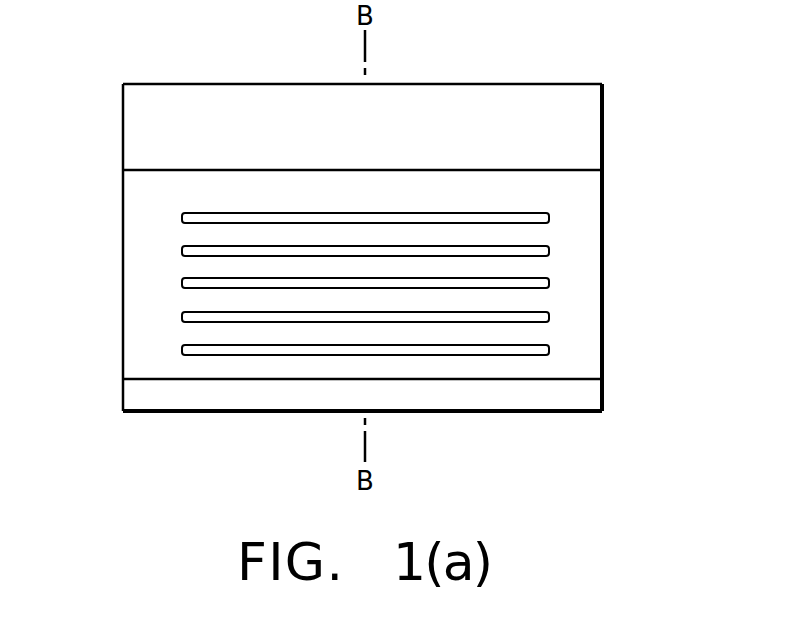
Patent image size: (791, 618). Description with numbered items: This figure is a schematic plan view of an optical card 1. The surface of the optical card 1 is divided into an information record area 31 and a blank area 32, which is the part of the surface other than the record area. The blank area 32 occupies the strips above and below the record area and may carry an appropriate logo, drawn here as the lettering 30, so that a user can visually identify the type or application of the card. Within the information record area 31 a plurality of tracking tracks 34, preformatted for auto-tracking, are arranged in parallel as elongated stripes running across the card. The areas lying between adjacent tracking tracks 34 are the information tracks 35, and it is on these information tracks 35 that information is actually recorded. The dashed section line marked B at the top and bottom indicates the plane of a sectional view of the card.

The optical card 1 is at (602, 84).
The trademark / indicia printed on head 30 is at (175, 124).
The information record area 31 is at (597, 351).
The blank area 32 is at (590, 139).
The tracking tracks 34 is at (182, 220).
The information tracks 35 is at (543, 333).